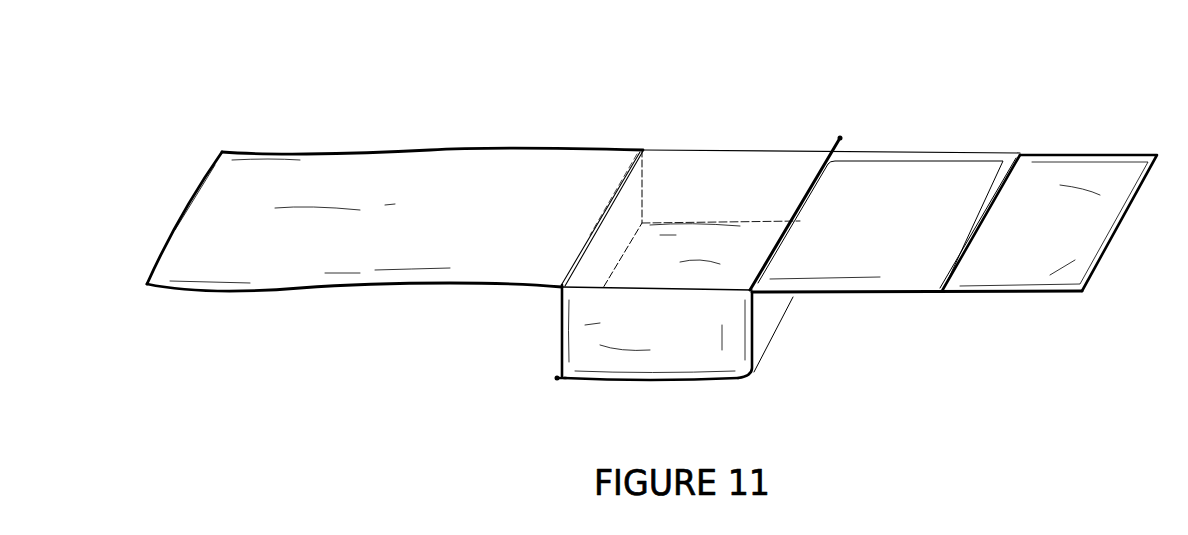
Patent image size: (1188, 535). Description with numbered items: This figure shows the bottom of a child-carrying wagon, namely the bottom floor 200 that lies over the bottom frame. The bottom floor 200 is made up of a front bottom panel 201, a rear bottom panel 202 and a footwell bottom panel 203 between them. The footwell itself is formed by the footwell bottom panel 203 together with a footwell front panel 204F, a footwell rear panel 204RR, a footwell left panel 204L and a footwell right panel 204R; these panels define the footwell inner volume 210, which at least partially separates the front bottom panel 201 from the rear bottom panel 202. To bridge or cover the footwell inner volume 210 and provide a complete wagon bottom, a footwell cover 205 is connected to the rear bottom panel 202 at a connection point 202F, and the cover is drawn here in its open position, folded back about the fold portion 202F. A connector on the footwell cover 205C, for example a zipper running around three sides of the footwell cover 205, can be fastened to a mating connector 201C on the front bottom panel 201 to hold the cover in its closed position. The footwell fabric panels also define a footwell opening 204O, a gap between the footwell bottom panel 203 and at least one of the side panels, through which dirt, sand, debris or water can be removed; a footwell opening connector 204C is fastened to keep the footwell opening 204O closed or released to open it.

The bottom floor 200 is at (257, 89).
The front bottom panel 201 is at (418, 187).
The connector 201C is at (613, 197).
The rear bottom panel 202 is at (1113, 193).
The connection point (fold portion) 202F is at (793, 207).
The footwell bottom panel 203 is at (707, 243).
The footwell front panel 204F is at (560, 320).
The footwell right panel 204R is at (758, 190).
The footwell rear panel 204RR is at (765, 322).
The footwell opening connector 204C is at (578, 385).
The footwell opening 204O is at (653, 383).
The footwell left panel 204L is at (725, 342).
The footwell cover 205 is at (972, 180).
The connector on the footwell cover 205C is at (1027, 157).
The footwell inner volume 210 is at (668, 251).